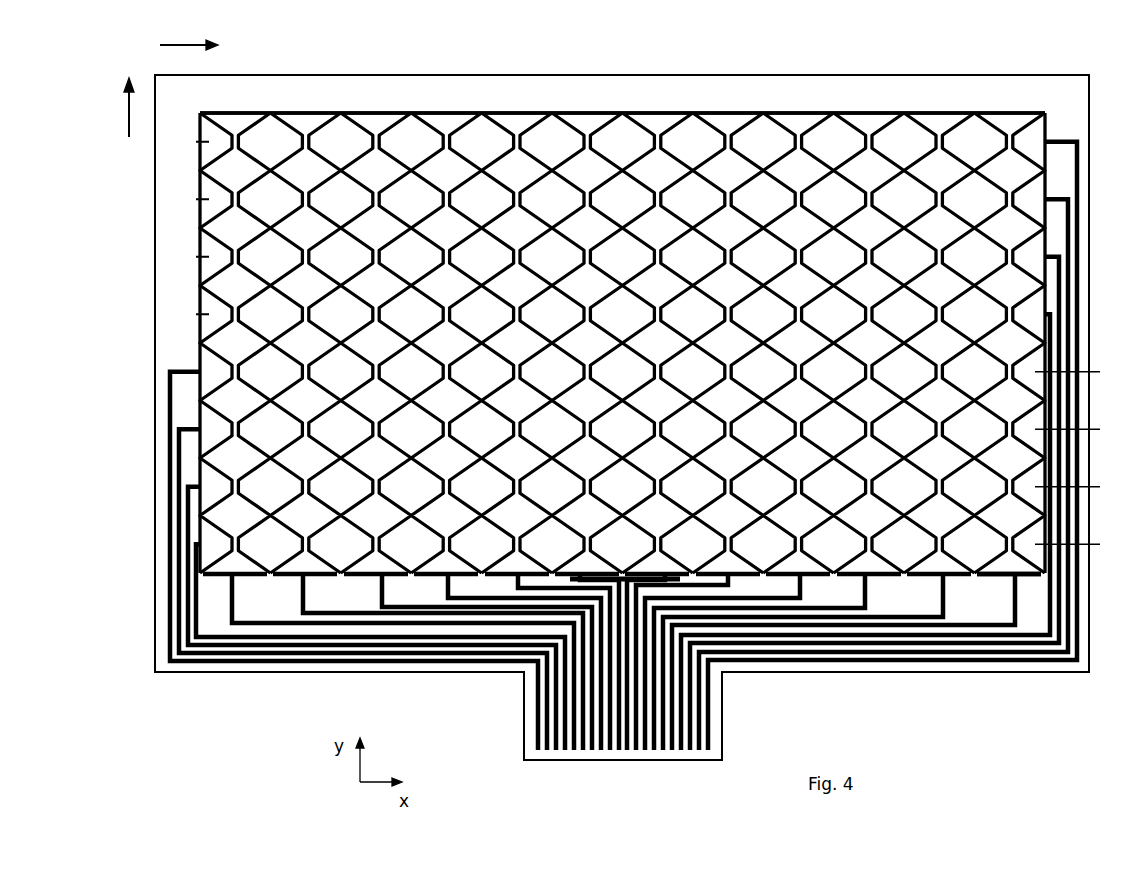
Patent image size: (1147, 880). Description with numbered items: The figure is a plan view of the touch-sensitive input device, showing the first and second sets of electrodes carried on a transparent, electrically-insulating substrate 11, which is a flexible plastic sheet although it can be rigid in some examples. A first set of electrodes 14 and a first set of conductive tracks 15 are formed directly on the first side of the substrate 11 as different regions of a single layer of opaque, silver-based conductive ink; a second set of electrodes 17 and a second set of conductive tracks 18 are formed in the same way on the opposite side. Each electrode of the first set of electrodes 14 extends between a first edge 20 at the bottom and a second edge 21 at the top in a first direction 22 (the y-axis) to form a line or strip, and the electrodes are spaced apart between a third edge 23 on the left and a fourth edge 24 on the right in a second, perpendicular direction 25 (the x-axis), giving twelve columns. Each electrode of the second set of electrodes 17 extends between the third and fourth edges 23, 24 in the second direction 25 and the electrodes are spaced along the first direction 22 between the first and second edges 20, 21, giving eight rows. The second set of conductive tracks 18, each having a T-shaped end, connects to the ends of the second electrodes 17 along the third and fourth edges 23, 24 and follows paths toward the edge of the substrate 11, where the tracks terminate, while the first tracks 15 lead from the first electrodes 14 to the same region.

The substrate 11 is at (158, 355).
The first set of electrodes 14 is at (236, 109).
The first set of conductive tracks 15 is at (230, 608).
The second set of electrodes 17 is at (201, 143).
The second set of conductive tracks 18 is at (171, 404).
The first edge 20 is at (1044, 581).
The second edge 21 is at (1039, 108).
The first direction 22 is at (128, 122).
The third edge 23 is at (195, 133).
The fourth edge 24 is at (1055, 118).
The second direction 25 is at (179, 43).